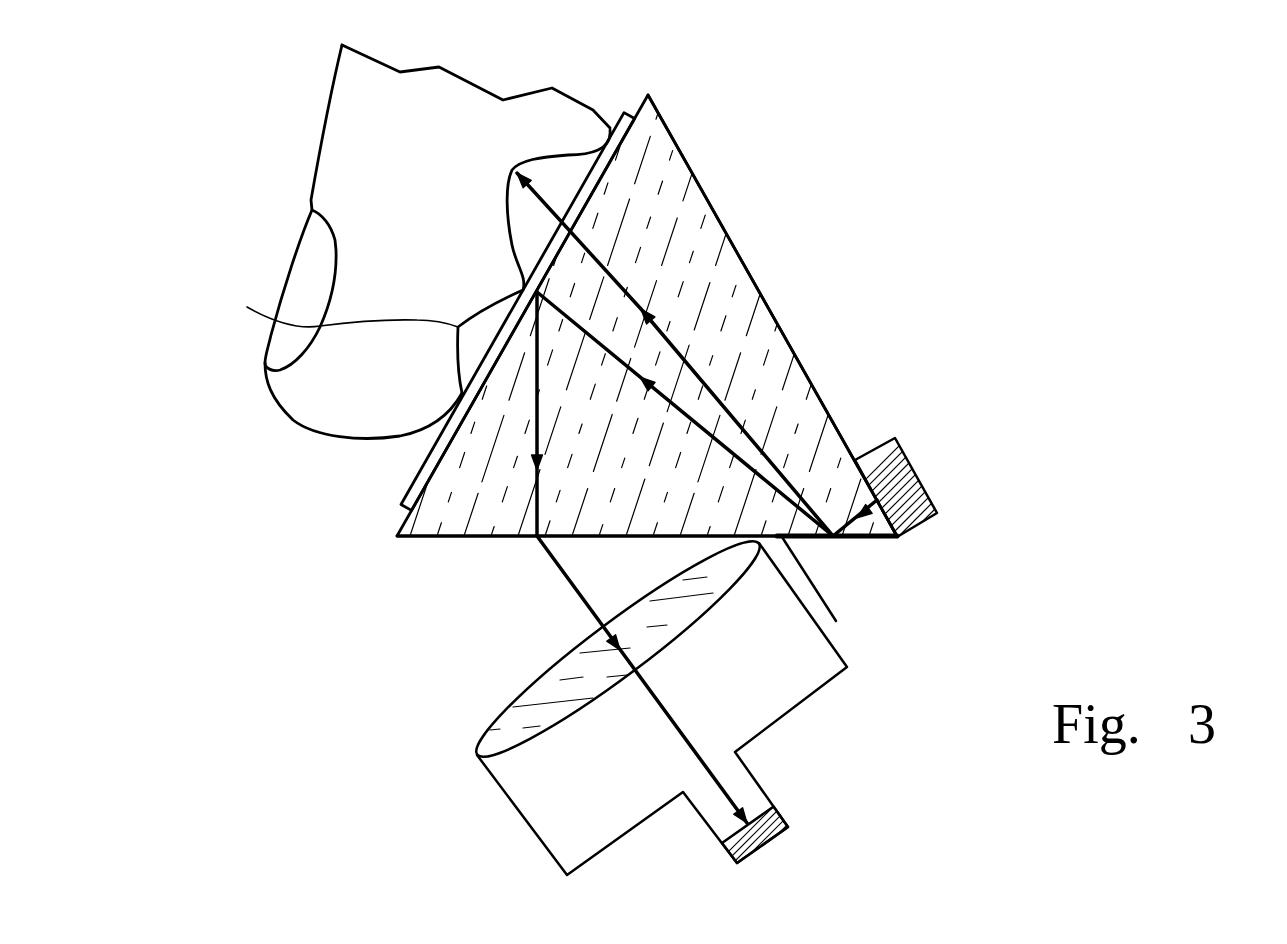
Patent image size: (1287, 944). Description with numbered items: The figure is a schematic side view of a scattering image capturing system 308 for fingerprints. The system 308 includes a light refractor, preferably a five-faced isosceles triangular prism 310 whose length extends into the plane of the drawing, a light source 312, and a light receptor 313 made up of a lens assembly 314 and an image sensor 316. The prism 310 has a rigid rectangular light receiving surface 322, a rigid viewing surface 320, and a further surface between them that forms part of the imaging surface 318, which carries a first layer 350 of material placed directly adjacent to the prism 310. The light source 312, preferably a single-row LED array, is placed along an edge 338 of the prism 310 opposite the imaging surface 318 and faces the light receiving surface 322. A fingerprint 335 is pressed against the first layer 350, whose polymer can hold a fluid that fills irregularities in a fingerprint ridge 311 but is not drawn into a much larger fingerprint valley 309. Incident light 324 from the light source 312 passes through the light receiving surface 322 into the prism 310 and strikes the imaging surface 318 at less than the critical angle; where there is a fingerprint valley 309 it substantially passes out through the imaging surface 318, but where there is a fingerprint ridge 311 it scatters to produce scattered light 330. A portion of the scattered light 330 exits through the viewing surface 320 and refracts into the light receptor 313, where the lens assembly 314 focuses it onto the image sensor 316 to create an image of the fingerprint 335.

The image capturing system 308 is at (963, 233).
The fingerprint valley 309 is at (322, 290).
The triangular prism 310 is at (701, 150).
The fingerprint ridge 311 is at (517, 287).
The light source 312 is at (920, 527).
The light receptor 313 is at (513, 807).
The lens assembly 314 is at (528, 682).
The image sensor 316 is at (765, 848).
The imaging surface 318 is at (373, 476).
The viewing surface 320 is at (422, 538).
The light receiving surface 322 is at (817, 387).
The incident light 324 is at (735, 450).
The scattered light 330 is at (537, 503).
The fingerprint 335 is at (396, 274).
The edge of prism 338 is at (897, 538).
The first layer 350 is at (628, 113).